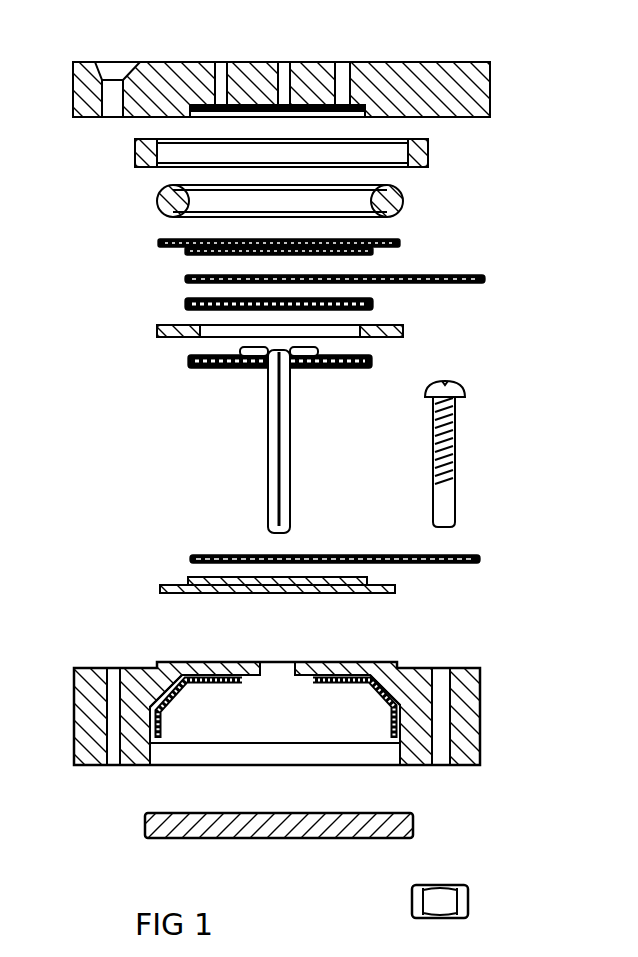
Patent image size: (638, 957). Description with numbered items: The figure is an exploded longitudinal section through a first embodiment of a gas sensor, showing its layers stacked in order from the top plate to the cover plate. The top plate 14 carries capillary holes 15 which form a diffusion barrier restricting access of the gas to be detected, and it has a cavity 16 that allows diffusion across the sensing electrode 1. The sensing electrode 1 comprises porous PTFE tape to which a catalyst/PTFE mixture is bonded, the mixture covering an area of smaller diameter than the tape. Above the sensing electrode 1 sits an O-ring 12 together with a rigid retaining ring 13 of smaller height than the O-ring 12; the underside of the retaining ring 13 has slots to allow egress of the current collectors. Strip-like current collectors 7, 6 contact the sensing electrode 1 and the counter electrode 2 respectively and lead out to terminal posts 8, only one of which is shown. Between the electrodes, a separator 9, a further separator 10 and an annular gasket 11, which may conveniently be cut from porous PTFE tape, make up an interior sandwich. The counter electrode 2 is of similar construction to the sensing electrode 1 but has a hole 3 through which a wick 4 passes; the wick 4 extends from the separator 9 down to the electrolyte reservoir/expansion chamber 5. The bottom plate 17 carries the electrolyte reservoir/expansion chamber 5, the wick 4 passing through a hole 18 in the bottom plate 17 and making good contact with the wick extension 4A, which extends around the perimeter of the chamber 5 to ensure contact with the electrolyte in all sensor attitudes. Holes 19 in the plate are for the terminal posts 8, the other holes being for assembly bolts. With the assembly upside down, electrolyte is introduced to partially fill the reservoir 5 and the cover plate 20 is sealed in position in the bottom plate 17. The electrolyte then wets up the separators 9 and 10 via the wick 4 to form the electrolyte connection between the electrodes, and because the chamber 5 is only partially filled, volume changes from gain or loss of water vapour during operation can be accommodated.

The sensing electrode 1 is at (160, 247).
The counter electrode 2 is at (165, 593).
The hole 3 is at (262, 583).
The wick 4 is at (272, 465).
The wick extension 4A is at (157, 720).
The electrolyte reservoir/expansion chamber 5 is at (290, 728).
The current collector 6 is at (473, 560).
The current collector 7 is at (457, 283).
The terminal post 8 is at (457, 457).
The separator 9 is at (205, 368).
The further separator 10 is at (187, 308).
The annular gasket 11 is at (400, 331).
The O-ring 12 is at (405, 205).
The rigid retaining ring 13 is at (425, 152).
The top plate 14 is at (487, 63).
The capillary holes 15 is at (332, 62).
The cavity 16 is at (230, 111).
The bottom plate 17 is at (463, 728).
The hole 18 is at (276, 664).
The holes 19 is at (437, 680).
The cover plate 20 is at (413, 832).